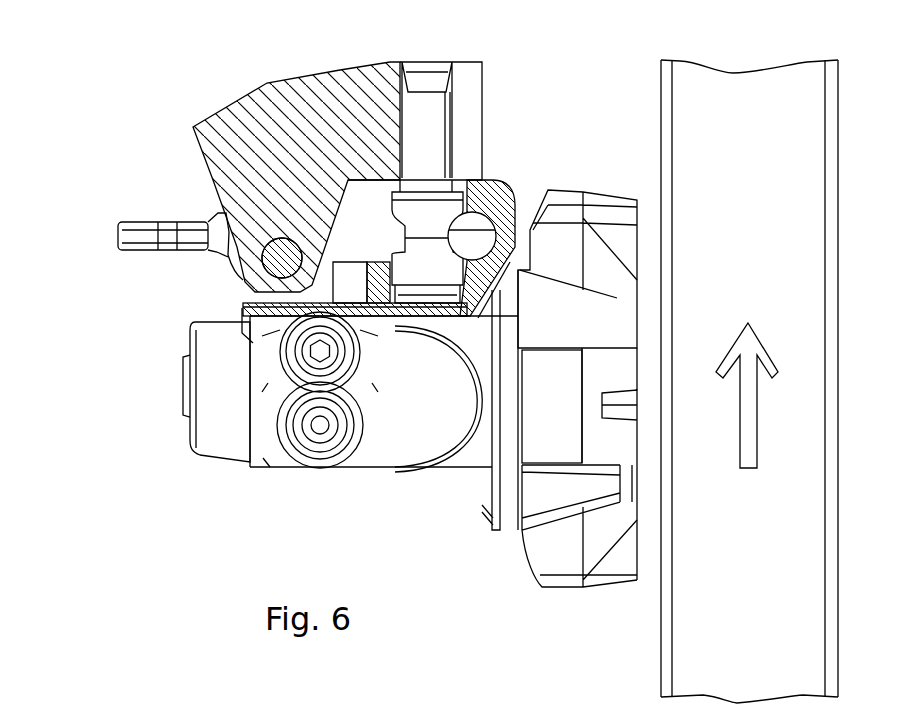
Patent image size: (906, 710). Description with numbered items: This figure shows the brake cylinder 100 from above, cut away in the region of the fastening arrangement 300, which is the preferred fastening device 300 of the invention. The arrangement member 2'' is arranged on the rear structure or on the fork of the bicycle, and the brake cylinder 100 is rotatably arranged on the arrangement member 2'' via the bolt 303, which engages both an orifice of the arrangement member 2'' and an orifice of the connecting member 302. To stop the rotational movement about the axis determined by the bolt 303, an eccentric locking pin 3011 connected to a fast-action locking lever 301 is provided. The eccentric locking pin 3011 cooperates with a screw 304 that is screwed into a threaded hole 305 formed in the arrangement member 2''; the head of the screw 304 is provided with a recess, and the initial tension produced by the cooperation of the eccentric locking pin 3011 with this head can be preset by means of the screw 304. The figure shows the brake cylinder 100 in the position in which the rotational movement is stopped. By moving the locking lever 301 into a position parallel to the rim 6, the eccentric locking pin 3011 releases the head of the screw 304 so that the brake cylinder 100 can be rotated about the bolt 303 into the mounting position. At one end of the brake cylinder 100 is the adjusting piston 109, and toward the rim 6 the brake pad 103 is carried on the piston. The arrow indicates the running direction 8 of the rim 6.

The arrangement member 2'' is at (317, 177).
The fastening device 300 is at (106, 223).
The fast-action locking lever 301 is at (125, 238).
The connecting member 302 is at (243, 294).
The bolt 303 is at (243, 277).
The screw 304 is at (428, 80).
The threaded hole 305 is at (450, 72).
The eccentric locking pin 3011 is at (498, 192).
The brake cylinder 100 is at (443, 417).
The adjusting piston 109 is at (185, 408).
The brake pad 103 is at (618, 563).
The running direction 8 is at (750, 435).
The rim 6 is at (754, 601).